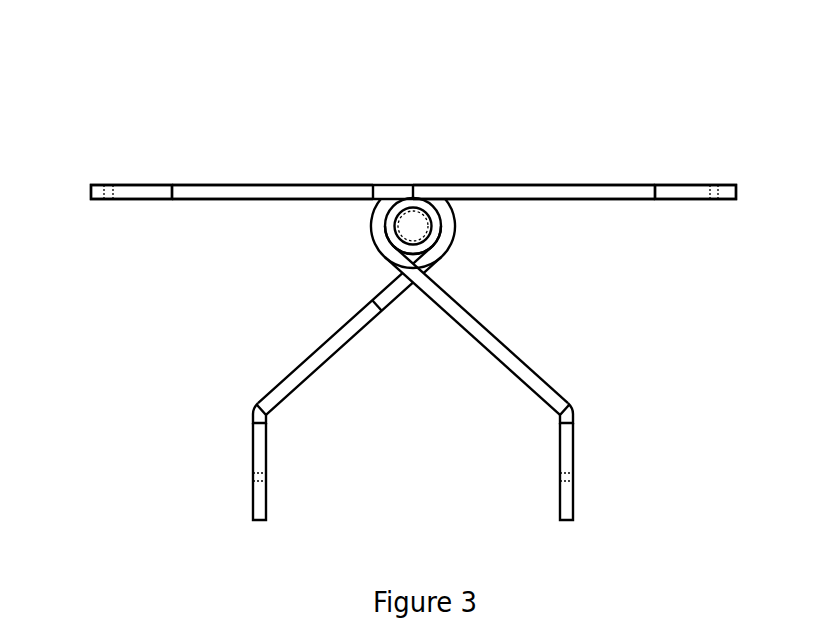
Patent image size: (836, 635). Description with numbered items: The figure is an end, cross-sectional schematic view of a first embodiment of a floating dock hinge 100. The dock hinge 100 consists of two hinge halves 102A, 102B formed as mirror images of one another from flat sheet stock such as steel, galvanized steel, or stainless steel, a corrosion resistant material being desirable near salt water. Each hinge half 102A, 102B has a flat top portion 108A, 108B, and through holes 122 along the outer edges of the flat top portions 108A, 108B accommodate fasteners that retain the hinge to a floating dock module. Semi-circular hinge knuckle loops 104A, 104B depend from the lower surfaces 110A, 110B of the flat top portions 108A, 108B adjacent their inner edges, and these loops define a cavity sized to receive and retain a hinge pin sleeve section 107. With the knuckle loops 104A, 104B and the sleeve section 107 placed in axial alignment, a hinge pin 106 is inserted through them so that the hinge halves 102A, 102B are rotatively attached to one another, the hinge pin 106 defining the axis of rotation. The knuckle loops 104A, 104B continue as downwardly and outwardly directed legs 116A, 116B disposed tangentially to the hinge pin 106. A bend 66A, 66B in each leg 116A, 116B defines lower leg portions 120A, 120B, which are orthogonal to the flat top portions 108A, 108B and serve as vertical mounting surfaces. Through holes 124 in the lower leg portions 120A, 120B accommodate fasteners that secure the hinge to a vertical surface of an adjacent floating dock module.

The dock hinge 100 is at (152, 73).
The hinge half 102A is at (335, 285).
The hinge half 102B is at (497, 283).
The semi-circular hinge knuckle loop 104A is at (372, 220).
The semi-circular hinge knuckle loop 104B is at (456, 230).
The hinge pin 106 is at (413, 226).
The hinge pin sleeve section 107 is at (385, 218).
The flat top portion 108A is at (283, 185).
The flat top portion 108B is at (596, 185).
The lower surface 110A is at (173, 214).
The lower surface 110B is at (647, 214).
The leg 116A is at (328, 340).
The leg 116B is at (498, 340).
The bend 66A is at (254, 410).
The bend 66B is at (574, 412).
The lower leg portion 120A is at (253, 503).
The lower leg portion 120B is at (574, 497).
The through holes 122 is at (107, 185).
The through holes 124 is at (560, 478).